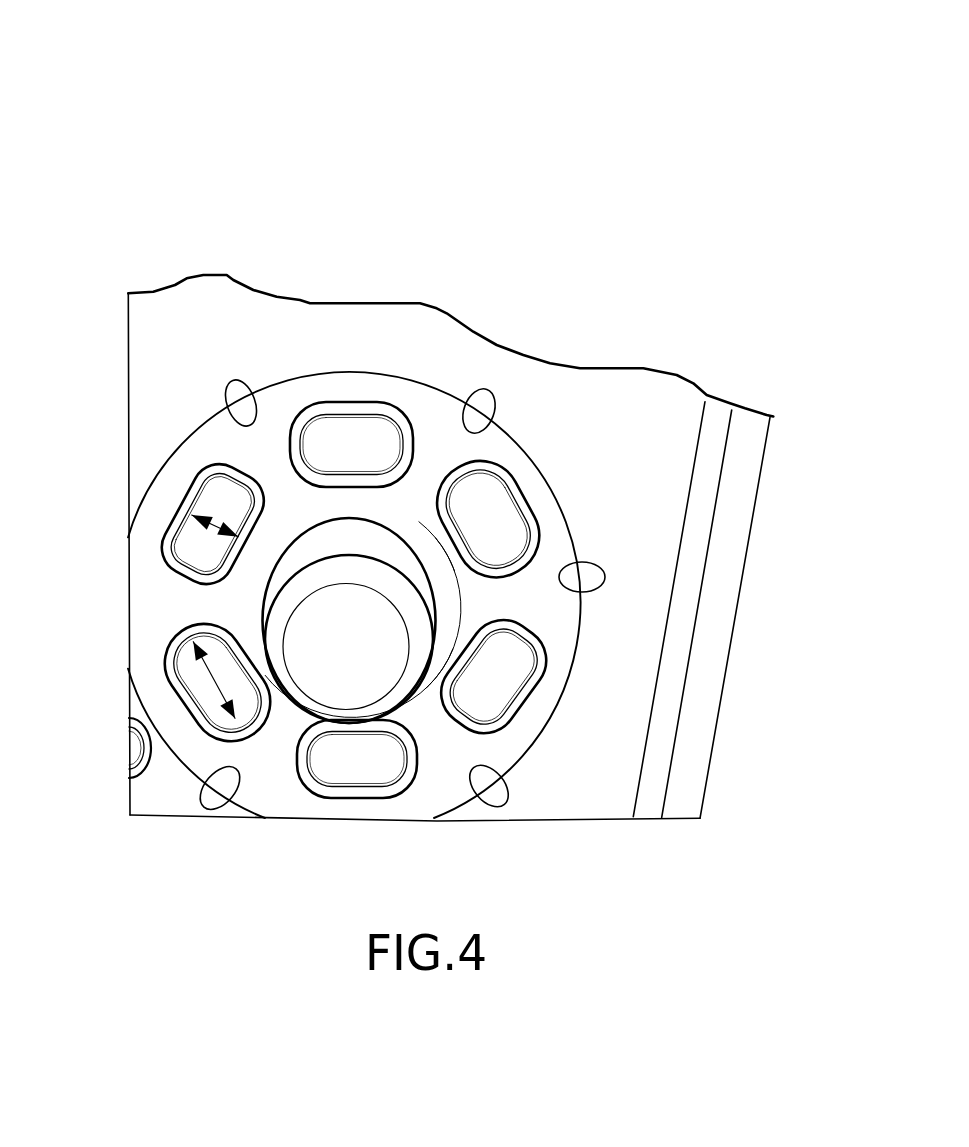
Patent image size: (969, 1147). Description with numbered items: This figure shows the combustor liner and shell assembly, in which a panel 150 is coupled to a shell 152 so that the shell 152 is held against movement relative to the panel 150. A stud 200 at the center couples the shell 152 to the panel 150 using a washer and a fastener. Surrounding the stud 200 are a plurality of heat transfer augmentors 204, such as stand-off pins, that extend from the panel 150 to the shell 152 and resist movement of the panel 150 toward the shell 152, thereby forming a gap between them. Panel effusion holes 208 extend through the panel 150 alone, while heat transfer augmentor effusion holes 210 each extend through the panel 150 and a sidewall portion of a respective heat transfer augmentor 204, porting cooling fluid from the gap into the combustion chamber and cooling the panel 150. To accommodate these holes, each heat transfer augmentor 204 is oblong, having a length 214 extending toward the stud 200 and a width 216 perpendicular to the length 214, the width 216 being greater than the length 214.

The panel 150 is at (474, 92).
The shell 152 is at (757, 498).
The stud 200 is at (344, 602).
The heat transfer augmentors 204 is at (339, 396).
The panel effusion holes 208 is at (482, 398).
The heat transfer augmentor effusion holes 210 is at (545, 493).
The length 214 is at (218, 524).
The width 216 is at (214, 680).